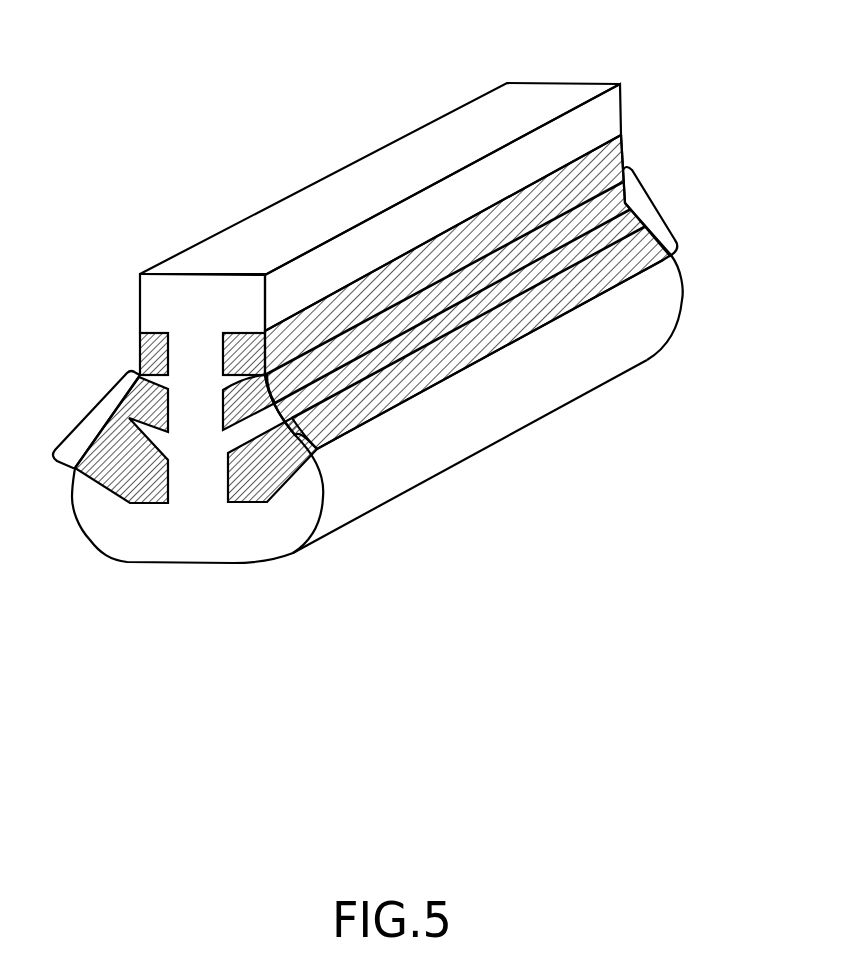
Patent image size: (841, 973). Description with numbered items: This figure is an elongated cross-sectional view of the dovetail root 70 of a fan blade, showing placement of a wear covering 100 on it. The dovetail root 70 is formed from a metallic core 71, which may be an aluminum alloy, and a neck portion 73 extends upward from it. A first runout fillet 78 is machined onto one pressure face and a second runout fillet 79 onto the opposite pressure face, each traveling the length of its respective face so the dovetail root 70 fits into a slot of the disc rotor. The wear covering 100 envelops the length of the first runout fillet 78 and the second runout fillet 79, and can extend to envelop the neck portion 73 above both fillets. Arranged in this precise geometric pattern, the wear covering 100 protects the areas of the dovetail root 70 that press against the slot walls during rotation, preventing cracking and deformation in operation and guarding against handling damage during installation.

The dovetail root 70 is at (182, 113).
The metallic core 71 is at (595, 122).
The neck portion 73 is at (198, 360).
The first runout fillet 78 is at (652, 205).
The second runout fillet 79 is at (92, 413).
The wear covering 100 is at (412, 399).